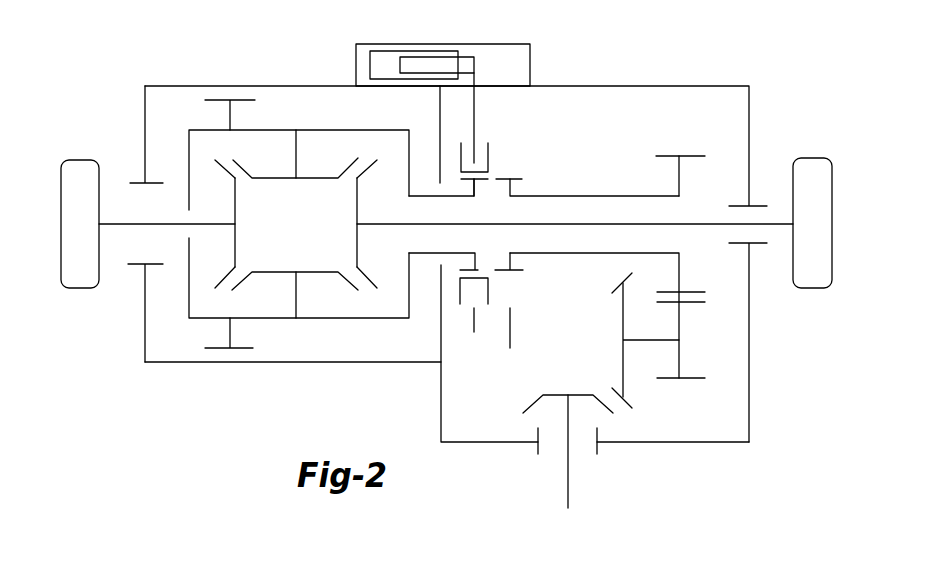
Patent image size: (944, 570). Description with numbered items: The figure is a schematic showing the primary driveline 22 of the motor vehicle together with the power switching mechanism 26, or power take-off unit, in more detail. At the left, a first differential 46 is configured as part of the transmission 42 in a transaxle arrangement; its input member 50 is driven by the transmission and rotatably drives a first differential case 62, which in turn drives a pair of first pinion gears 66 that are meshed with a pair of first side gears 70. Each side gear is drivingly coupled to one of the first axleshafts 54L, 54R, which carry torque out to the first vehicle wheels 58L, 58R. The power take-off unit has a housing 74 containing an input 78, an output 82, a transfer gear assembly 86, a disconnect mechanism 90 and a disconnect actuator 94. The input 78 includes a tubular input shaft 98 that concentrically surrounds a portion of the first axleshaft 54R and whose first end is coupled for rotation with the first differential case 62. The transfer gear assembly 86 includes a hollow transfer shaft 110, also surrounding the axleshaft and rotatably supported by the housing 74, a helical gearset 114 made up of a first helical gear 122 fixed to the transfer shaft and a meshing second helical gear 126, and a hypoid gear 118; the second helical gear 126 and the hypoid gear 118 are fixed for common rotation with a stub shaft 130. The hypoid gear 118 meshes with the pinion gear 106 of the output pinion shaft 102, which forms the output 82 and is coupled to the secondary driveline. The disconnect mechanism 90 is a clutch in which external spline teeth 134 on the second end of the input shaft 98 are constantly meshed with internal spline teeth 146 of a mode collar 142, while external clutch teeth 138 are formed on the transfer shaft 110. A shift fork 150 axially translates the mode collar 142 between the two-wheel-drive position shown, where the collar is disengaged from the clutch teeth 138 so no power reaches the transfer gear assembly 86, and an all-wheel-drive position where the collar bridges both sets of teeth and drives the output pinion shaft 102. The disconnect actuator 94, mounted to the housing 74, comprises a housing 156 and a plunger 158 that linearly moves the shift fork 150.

The primary driveline 22 is at (256, 411).
The power switching mechanism 26 is at (778, 94).
The transmission 42 is at (143, 309).
The first differential 46 is at (333, 322).
The input member 50 is at (215, 352).
The first axleshaft 54L is at (117, 224).
The first axleshaft 54R is at (782, 224).
The first vehicle wheel 58L is at (80, 165).
The first vehicle wheel 58R is at (815, 165).
The first differential case 62 is at (353, 130).
The first pinion gears 66 is at (313, 178).
The first side gears 70 is at (357, 203).
The housing 74 is at (758, 391).
The input 78 is at (434, 199).
The output 82 is at (572, 490).
The transfer gear assembly 86 is at (663, 394).
The disconnect mechanism 90 is at (499, 165).
The disconnect actuator 94 is at (540, 63).
The input shaft 98 is at (424, 252).
The output pinion shaft 102 is at (567, 470).
The pinion gear 106 is at (532, 400).
The transfer shaft 110 is at (632, 195).
The helical gearset 114 is at (714, 300).
The hypoid gear 118 is at (632, 273).
The first helical gear 122 is at (668, 155).
The second helical gear 126 is at (690, 380).
The stub shaft 130 is at (633, 340).
The external spline teeth 134 is at (482, 182).
The external clutch teeth 138 is at (516, 178).
The mode collar 142 is at (492, 152).
The internal spline teeth 146 is at (490, 277).
The shift fork 150 is at (475, 113).
The housing 156 is at (369, 67).
The plunger 158 is at (470, 57).